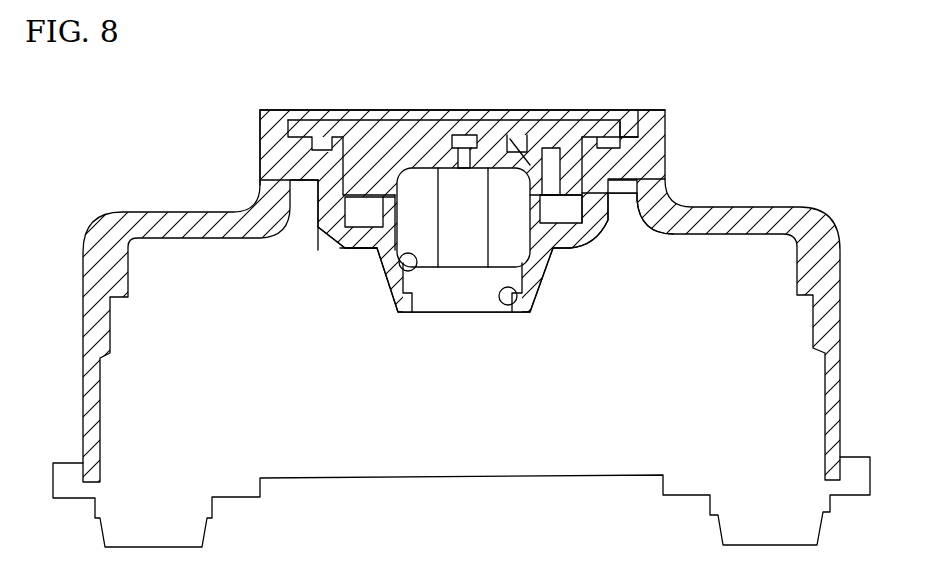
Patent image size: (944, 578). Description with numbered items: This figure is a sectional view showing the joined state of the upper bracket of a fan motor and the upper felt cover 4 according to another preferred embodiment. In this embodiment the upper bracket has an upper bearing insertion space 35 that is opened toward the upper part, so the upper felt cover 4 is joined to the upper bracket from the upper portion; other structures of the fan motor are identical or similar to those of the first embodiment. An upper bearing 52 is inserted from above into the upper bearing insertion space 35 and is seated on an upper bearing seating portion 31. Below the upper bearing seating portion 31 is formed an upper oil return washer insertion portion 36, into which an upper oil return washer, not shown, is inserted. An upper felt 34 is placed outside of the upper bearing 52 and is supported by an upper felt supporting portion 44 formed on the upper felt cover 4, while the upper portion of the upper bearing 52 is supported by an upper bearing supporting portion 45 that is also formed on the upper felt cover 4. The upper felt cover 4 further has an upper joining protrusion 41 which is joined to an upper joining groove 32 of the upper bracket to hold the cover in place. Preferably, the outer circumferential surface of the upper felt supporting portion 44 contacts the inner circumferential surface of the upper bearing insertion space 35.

The upper felt cover 4 is at (365, 133).
The upper bearing seating portion 31 is at (403, 268).
The upper joining groove 32 is at (327, 138).
The upper felt 34 is at (352, 226).
The upper bearing insertion space 35 is at (340, 170).
The upper oil return washer insertion portion 36 is at (506, 306).
The upper joining protrusion 41 is at (655, 148).
The upper felt supporting portion 44 is at (640, 183).
The upper bearing supporting portion 45 is at (535, 150).
The upper bearing 52 is at (427, 182).